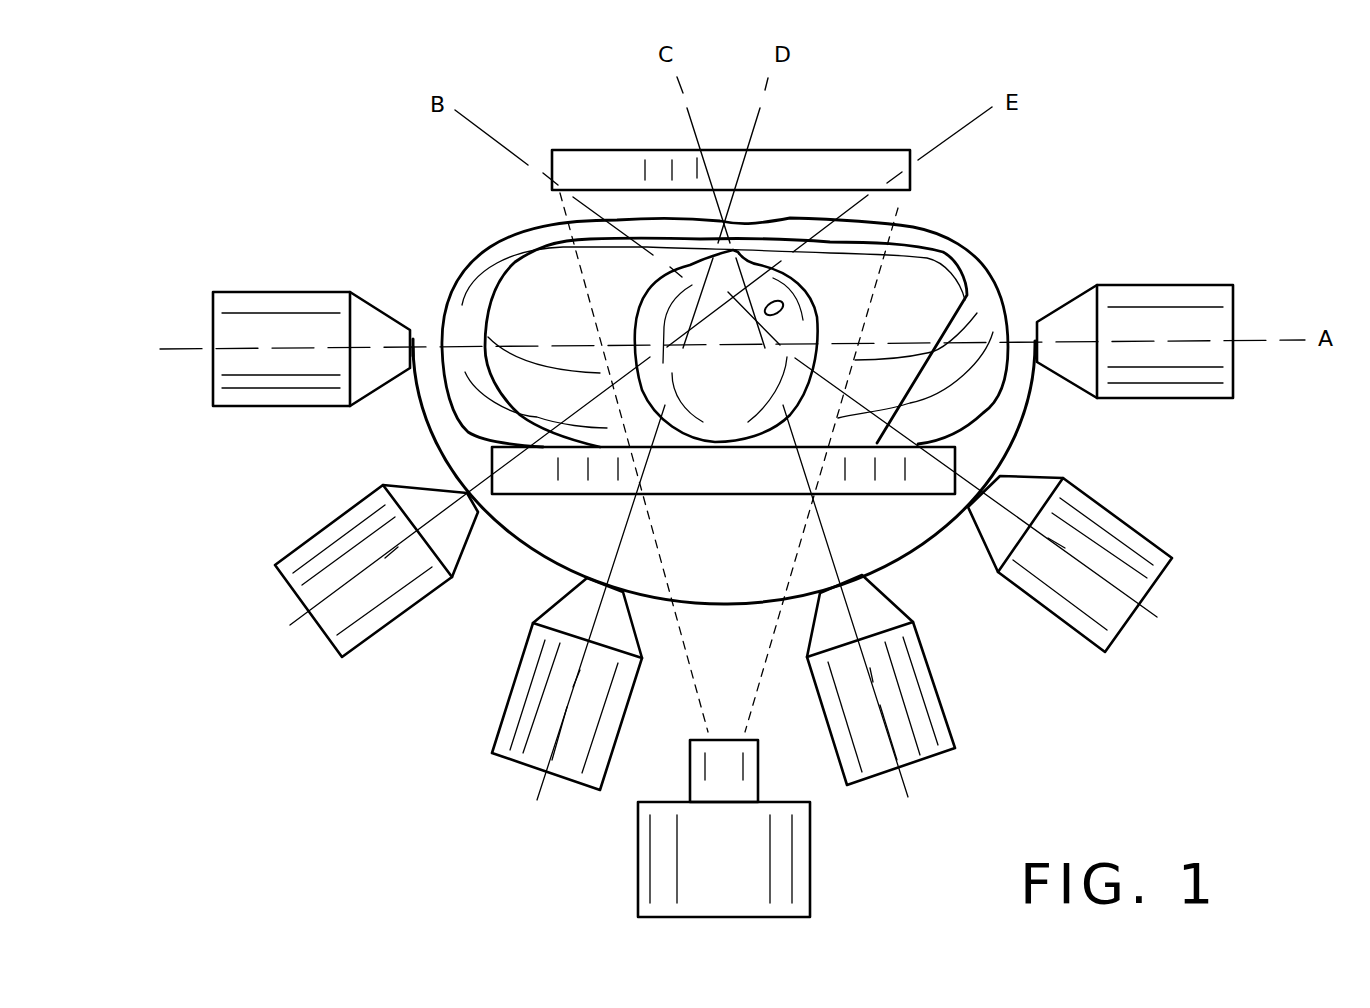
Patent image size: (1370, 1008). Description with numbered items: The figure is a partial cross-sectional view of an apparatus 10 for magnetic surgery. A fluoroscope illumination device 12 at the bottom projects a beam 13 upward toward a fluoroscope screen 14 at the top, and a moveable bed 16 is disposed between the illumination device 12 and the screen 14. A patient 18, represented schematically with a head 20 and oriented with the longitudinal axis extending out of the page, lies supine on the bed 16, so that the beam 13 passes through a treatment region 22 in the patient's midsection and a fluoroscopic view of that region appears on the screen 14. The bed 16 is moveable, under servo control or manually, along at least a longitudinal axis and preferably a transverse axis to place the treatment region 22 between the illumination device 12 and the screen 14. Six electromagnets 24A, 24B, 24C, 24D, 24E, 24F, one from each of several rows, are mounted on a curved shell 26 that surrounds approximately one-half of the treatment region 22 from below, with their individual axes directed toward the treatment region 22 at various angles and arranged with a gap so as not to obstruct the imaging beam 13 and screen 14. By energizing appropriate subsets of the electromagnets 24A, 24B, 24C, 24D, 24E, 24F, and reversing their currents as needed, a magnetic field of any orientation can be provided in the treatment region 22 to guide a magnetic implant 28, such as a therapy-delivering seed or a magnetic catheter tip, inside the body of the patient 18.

The apparatus 10 is at (424, 700).
The fluoroscope illumination device 12 is at (810, 870).
The beam 13 is at (768, 668).
The fluoroscope screen 14 is at (813, 150).
The moveable bed 16 is at (776, 495).
The patient 18 is at (998, 267).
The head 20 is at (637, 310).
The treatment region 22 is at (968, 243).
The electromagnet 24A is at (1183, 399).
The electromagnet 24B is at (1075, 633).
The electromagnet 24C is at (945, 708).
The electromagnet 24D is at (507, 697).
The electromagnet 24E is at (380, 632).
The electromagnet 24F is at (305, 407).
The curved shell 26 is at (927, 535).
The magnetic implant 28 is at (877, 237).